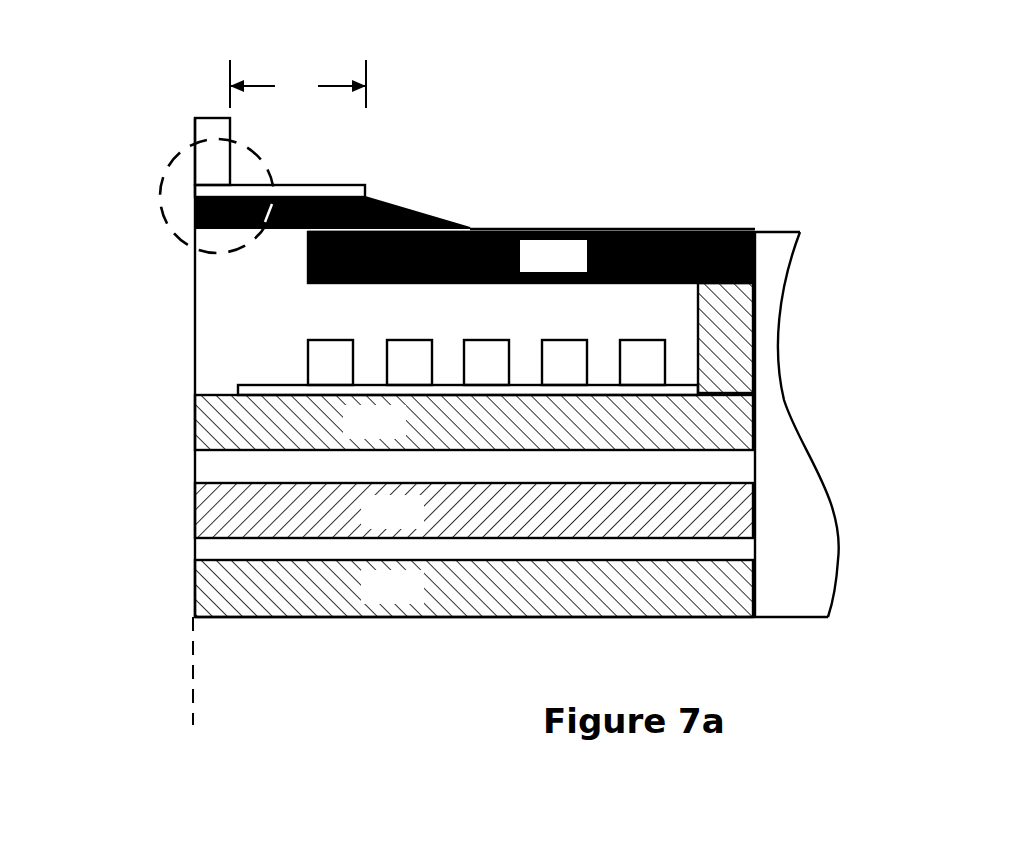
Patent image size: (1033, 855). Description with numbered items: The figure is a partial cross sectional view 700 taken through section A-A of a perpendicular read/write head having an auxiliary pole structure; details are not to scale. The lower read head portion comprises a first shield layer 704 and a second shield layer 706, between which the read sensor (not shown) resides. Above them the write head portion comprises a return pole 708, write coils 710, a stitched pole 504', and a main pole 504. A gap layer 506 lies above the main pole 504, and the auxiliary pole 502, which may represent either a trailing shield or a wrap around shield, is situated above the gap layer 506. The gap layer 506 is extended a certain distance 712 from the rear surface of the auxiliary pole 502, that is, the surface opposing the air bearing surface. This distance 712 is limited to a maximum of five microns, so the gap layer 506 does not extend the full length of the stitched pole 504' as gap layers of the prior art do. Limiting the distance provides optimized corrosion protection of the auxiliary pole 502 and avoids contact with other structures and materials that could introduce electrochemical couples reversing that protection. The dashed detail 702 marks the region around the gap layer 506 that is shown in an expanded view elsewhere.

The partial cross sectional view 700 is at (643, 67).
The detail 702 is at (175, 160).
The auxiliary pole 502 is at (208, 134).
The main pole 504 is at (475, 199).
The stitched pole 504' is at (530, 257).
The gap layer 506 is at (327, 187).
The first shield layer 704 is at (420, 602).
The second shield layer 706 is at (420, 527).
The return pole 708 is at (402, 437).
The write coils 710 is at (307, 362).
The distance L1 712 is at (308, 67).